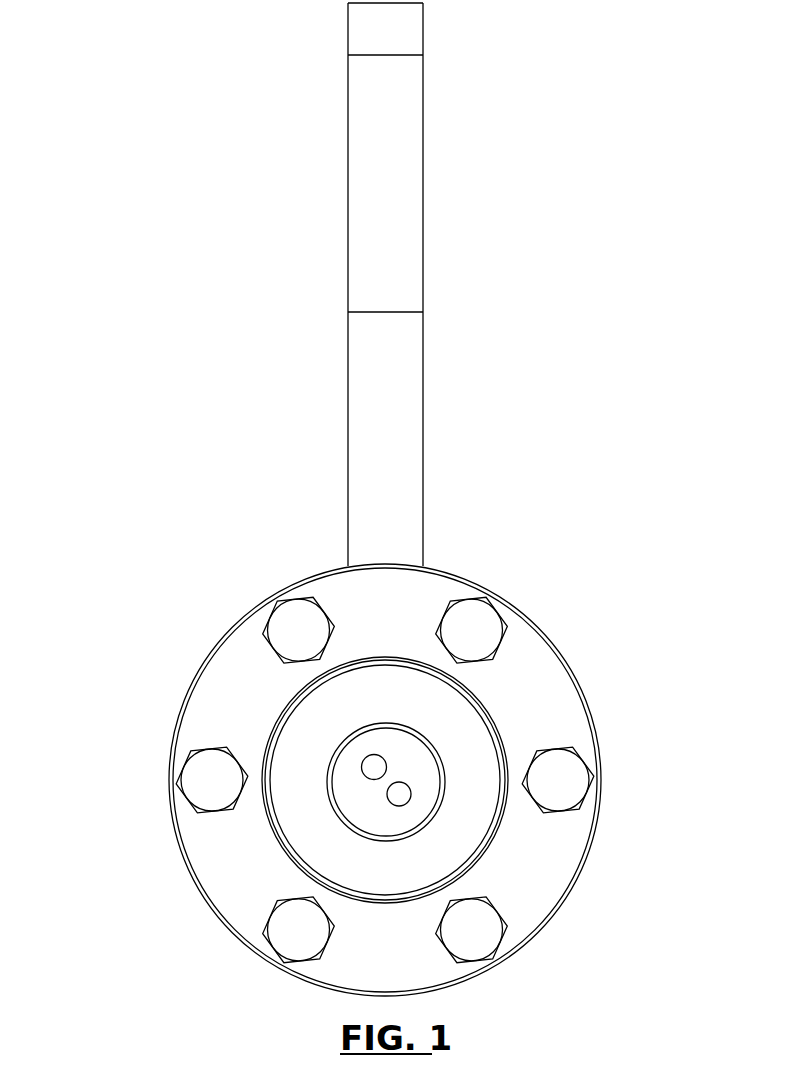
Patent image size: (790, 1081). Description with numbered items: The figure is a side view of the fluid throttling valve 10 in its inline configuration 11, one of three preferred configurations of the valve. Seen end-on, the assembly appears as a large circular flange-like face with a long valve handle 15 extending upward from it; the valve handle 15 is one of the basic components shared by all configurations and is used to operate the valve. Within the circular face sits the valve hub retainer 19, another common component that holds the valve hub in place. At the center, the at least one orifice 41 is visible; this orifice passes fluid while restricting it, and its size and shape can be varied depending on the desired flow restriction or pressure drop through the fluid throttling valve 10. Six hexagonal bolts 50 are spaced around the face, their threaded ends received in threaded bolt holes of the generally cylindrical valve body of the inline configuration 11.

The fluid throttling valve 10 is at (100, 182).
The inline configuration 11 is at (558, 928).
The valve handle 15 is at (416, 256).
The valve hub retainer 19 is at (537, 707).
The orifice 41 is at (366, 760).
The bolts 50 is at (557, 785).